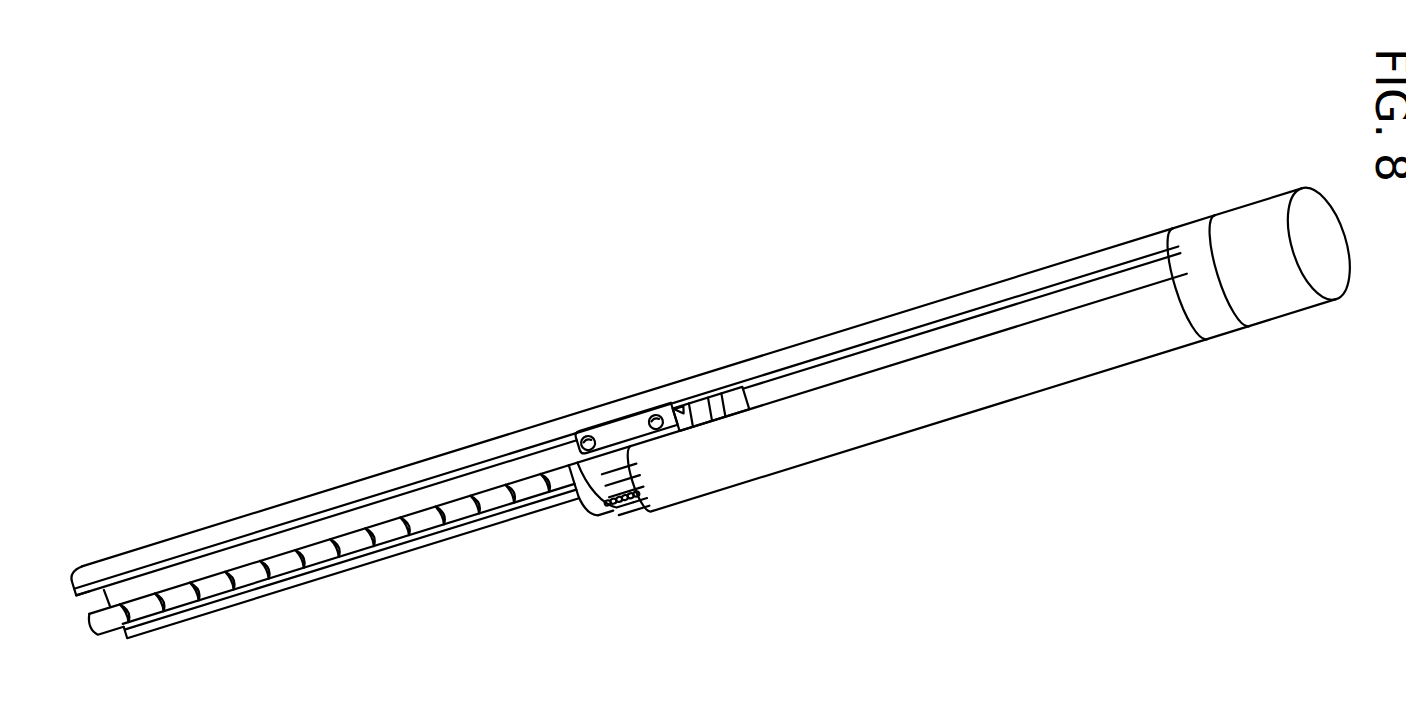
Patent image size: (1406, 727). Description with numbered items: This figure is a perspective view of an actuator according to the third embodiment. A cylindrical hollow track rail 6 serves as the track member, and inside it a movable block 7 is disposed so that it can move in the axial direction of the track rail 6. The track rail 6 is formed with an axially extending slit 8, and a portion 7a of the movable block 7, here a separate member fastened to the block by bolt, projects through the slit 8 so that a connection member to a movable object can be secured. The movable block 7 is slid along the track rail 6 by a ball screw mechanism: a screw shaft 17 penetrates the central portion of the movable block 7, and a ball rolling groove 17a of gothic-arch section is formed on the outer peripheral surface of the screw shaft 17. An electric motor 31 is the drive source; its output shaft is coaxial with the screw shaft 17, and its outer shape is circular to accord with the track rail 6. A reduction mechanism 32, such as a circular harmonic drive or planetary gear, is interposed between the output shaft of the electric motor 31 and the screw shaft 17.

The track rail 6 is at (788, 458).
The movable block 7 is at (575, 505).
The portion of the movable block 7a is at (612, 437).
The slit 8 is at (770, 390).
The screw shaft 17 is at (417, 523).
The ball rolling groove 17a is at (442, 518).
The electric motor 31 is at (1280, 303).
The reduction mechanism 32 is at (1220, 323).